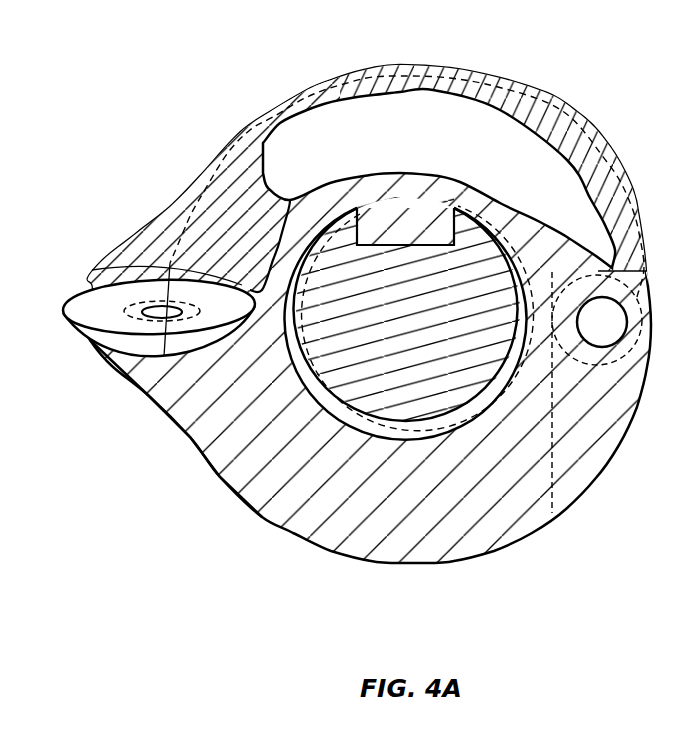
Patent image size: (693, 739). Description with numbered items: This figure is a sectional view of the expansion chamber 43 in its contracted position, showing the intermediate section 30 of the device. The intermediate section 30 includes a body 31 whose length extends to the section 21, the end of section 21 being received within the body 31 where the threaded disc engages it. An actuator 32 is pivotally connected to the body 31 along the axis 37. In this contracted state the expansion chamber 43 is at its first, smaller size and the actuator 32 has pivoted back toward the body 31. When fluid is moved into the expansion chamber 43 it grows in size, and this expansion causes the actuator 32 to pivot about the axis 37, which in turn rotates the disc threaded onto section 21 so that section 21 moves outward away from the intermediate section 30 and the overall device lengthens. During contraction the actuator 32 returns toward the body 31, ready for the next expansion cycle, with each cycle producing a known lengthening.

The intermediate section 30 is at (357, 543).
The actuator 32 is at (150, 237).
The body 31 is at (220, 450).
The section 21 is at (420, 390).
The axis 37 is at (600, 327).
The expansion chamber 43 is at (87, 312).